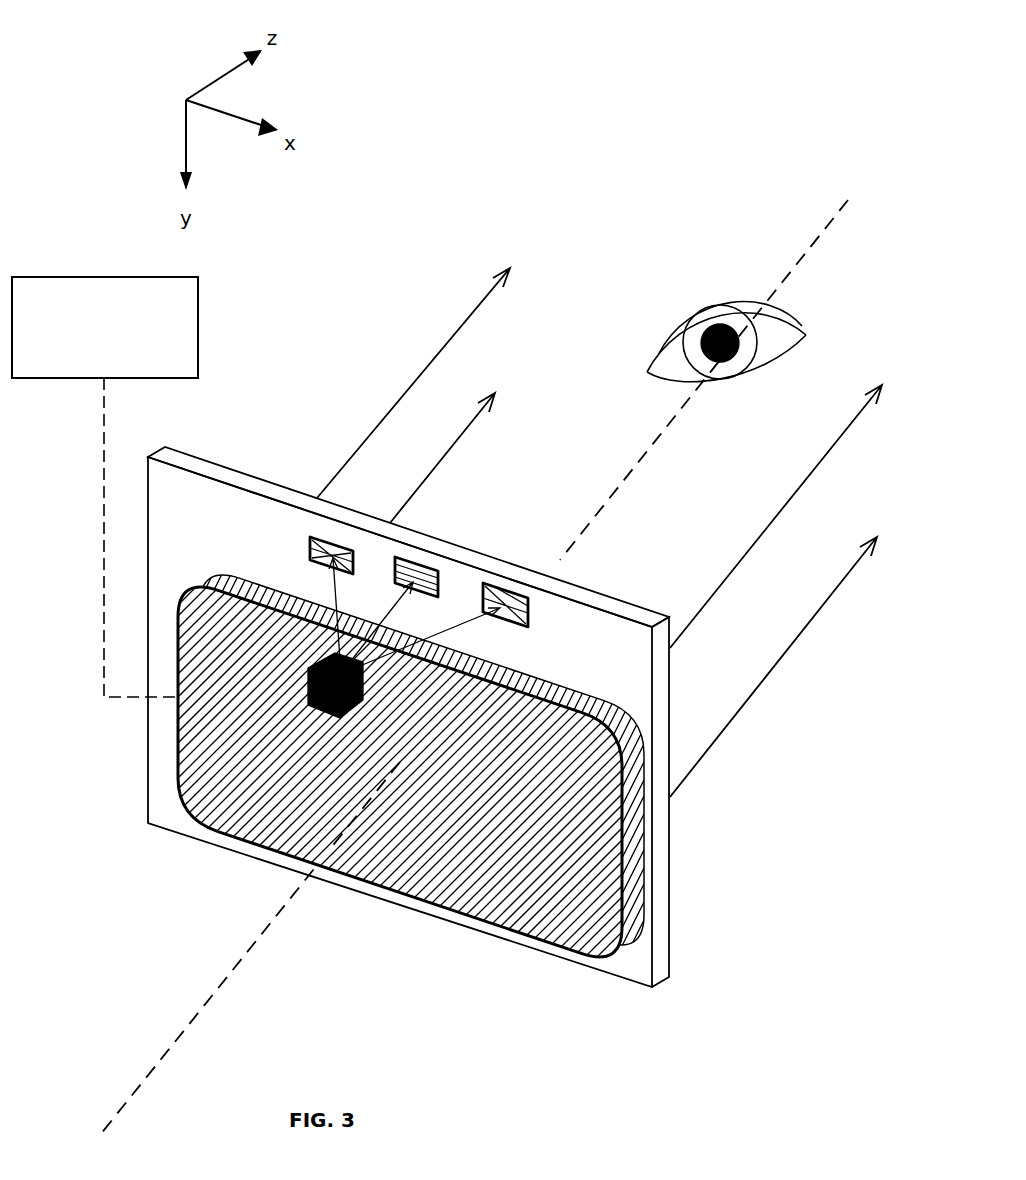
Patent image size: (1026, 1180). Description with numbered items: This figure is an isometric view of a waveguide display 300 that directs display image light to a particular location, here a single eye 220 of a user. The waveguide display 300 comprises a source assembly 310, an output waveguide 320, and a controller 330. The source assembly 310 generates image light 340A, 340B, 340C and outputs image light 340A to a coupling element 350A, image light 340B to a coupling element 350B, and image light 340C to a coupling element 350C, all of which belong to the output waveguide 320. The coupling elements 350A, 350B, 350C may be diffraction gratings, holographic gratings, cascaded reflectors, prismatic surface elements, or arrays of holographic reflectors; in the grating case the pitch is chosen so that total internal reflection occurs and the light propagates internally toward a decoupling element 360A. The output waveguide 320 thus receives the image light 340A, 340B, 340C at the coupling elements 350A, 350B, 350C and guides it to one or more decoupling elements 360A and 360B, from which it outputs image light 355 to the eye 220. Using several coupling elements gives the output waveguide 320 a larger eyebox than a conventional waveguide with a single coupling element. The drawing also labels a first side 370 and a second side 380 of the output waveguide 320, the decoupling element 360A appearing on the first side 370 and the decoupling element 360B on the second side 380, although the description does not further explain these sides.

The waveguide display 300 is at (50, 64).
The controller 330 is at (87, 354).
The image light 355 is at (437, 352).
The eye 220 is at (726, 314).
The coupling element 350A is at (440, 560).
The coupling element 350B is at (323, 537).
The coupling element 350C is at (528, 592).
The image light 340A is at (300, 670).
The image light 340B is at (250, 636).
The image light 340C is at (608, 684).
The output waveguide 320 is at (670, 827).
The second side 380 is at (675, 875).
The decoupling element 360A is at (257, 815).
The decoupling element 360B is at (643, 860).
The source assembly 310 is at (357, 700).
The first side 370 is at (623, 957).